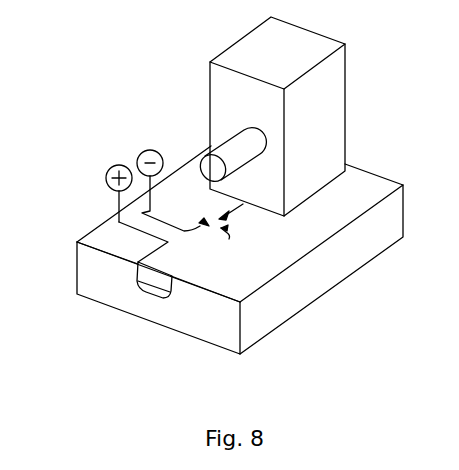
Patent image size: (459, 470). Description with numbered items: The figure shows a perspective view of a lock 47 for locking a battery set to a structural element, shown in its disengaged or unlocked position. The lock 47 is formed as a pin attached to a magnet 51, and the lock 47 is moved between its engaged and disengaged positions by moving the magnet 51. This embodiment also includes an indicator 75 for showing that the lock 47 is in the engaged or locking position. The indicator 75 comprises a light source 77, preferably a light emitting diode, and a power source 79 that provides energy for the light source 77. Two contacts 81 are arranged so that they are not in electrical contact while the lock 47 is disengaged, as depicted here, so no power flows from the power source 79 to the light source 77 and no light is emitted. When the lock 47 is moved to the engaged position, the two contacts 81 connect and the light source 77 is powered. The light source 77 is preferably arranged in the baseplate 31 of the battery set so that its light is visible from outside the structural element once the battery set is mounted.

The baseplate 31 is at (318, 273).
The lock 47 is at (208, 225).
The magnet 51 is at (328, 133).
The indicator 75 is at (99, 316).
The light source 77 is at (157, 300).
The power source 79 is at (118, 165).
The contacts 81 is at (184, 150).